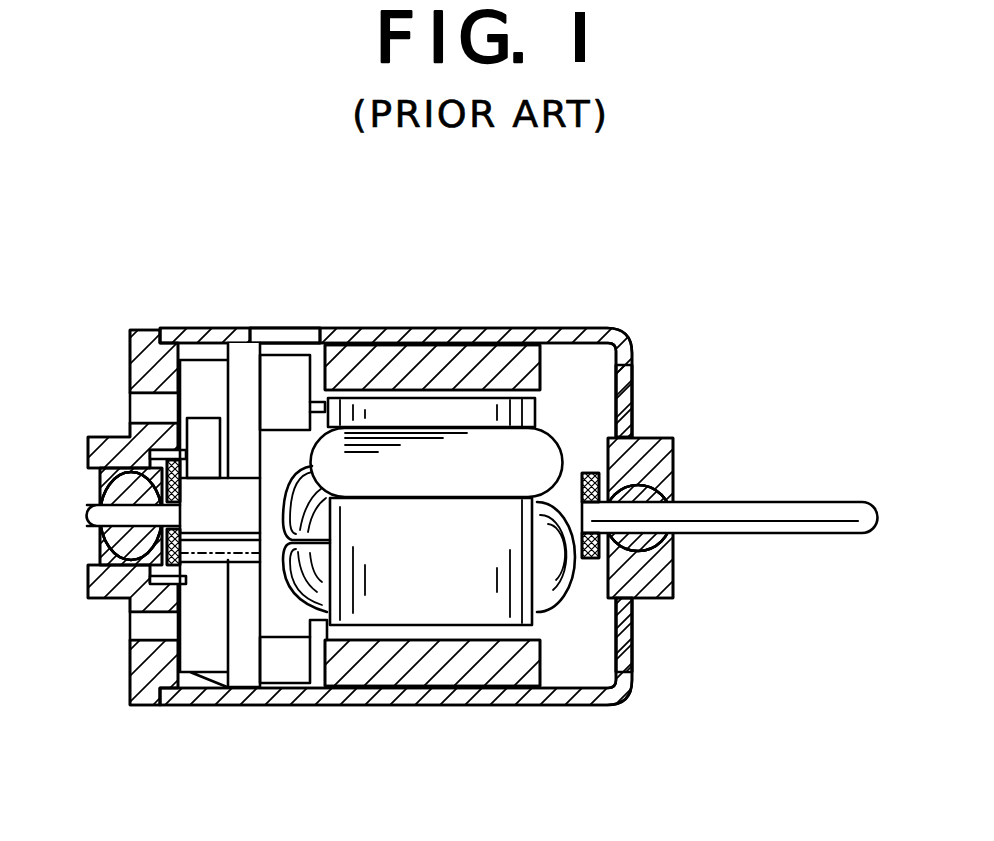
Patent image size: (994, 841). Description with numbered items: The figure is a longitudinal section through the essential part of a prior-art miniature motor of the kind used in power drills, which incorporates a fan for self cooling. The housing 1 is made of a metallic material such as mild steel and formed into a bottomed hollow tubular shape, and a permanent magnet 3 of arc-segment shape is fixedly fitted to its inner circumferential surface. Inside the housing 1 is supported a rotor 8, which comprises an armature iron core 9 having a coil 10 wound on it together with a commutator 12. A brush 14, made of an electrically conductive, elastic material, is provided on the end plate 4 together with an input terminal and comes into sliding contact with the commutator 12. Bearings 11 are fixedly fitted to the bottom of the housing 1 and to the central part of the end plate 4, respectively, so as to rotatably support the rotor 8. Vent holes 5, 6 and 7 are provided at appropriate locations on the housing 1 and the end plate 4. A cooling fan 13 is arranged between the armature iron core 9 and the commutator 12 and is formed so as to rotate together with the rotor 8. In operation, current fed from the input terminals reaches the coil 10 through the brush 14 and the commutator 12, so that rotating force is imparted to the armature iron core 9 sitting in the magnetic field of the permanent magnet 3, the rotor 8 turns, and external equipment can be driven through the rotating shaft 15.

The housing 1 is at (380, 328).
The permanent magnet 3 is at (467, 360).
The end plate 4 is at (147, 363).
The vent hole 5 is at (145, 412).
The vent hole 6 is at (290, 328).
The vent hole 7 is at (622, 405).
The rotor 8 is at (565, 409).
The armature iron core 9 is at (505, 590).
The coil 10 is at (573, 590).
The bearing 11 is at (100, 472).
The commutator 12 is at (212, 548).
The cooling fan 13 is at (283, 665).
The brush 14 is at (205, 420).
The rotating shaft 15 is at (762, 500).